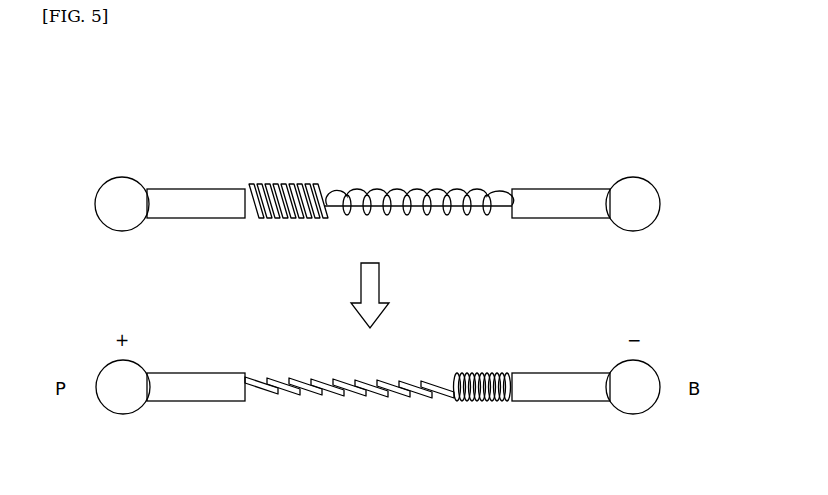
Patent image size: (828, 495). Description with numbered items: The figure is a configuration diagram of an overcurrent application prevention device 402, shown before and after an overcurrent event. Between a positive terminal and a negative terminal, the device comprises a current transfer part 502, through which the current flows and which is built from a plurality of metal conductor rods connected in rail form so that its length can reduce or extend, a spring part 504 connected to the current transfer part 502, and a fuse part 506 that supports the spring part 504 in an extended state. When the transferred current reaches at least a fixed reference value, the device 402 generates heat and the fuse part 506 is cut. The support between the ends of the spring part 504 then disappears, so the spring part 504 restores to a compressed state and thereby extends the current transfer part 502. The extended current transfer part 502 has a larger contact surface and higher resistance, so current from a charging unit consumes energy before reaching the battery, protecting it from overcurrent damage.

The overcurrent application prevention device 402 is at (183, 100).
The current transfer part 502 is at (291, 184).
The spring part 504 is at (375, 192).
The fuse part 506 is at (437, 208).